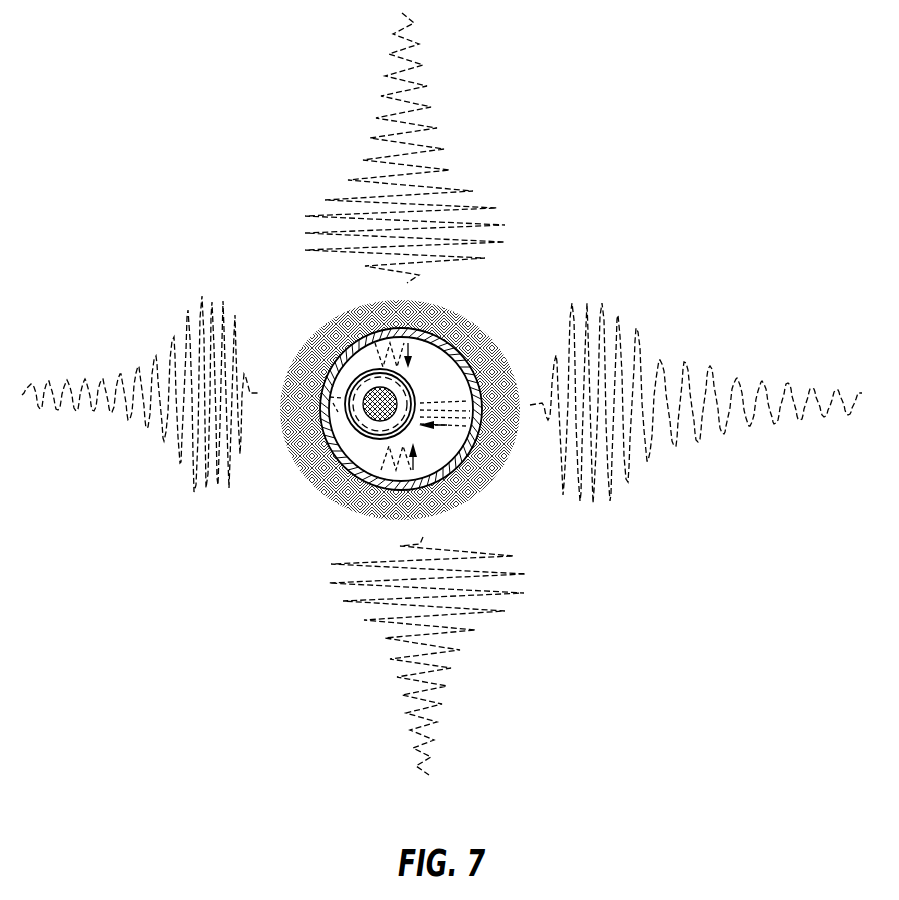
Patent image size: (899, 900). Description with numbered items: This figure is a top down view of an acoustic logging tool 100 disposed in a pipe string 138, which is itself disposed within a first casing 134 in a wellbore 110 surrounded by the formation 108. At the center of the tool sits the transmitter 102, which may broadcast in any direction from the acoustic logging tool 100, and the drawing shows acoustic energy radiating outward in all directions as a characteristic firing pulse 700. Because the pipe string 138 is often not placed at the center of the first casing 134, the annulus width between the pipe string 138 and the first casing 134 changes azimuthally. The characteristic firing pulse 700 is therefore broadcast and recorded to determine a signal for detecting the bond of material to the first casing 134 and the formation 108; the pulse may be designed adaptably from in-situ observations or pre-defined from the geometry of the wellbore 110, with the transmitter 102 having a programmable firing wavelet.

The acoustic logging tool 100 is at (355, 378).
The transmitter 102 is at (368, 410).
The surrounding medium 108 is at (497, 450).
The wellbore 110 is at (422, 362).
The first casing 134 is at (469, 357).
The pipe string 138 is at (341, 409).
The characteristic firing pulse 700 is at (400, 430).